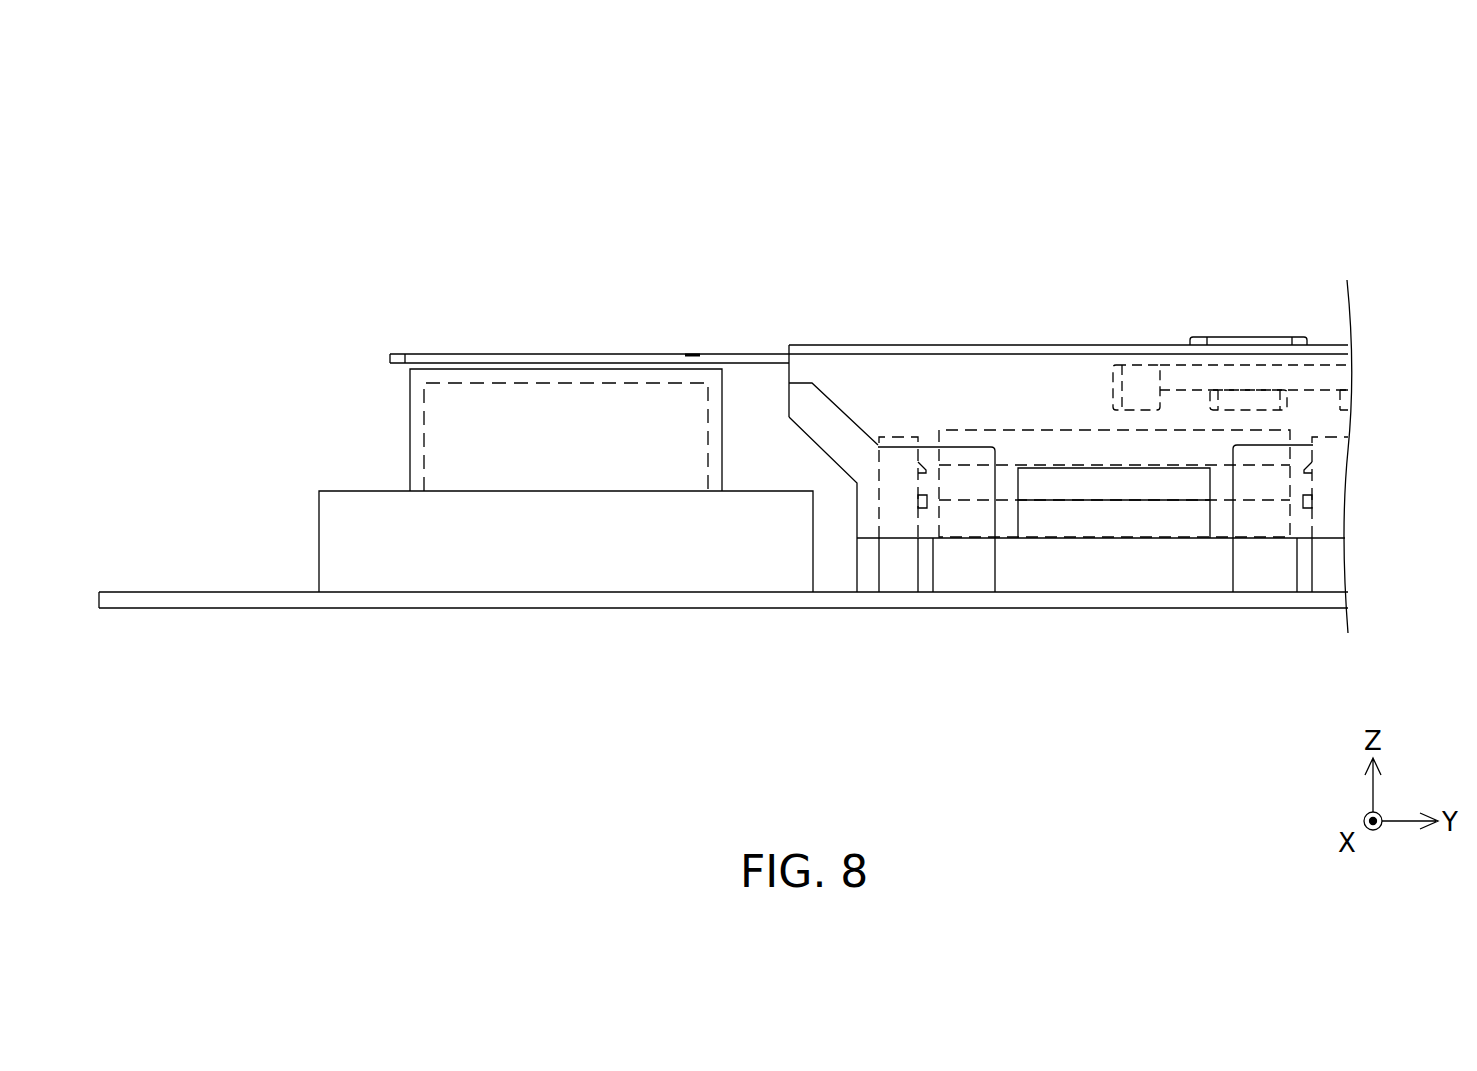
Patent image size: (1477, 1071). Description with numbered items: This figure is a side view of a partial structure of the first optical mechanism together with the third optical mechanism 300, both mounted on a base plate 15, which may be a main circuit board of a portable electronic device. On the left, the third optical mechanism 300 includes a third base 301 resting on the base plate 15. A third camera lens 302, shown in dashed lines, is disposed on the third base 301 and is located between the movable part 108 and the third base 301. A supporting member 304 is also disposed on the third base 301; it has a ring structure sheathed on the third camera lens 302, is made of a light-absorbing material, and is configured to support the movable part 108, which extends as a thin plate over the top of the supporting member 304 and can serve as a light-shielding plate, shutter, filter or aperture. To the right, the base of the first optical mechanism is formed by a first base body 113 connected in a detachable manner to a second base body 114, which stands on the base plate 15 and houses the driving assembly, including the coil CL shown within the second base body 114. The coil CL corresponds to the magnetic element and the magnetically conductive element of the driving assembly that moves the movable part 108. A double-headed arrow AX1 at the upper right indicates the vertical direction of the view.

The base plate 15 is at (952, 600).
The third optical mechanism 300 is at (533, 476).
The third base 301 is at (641, 575).
The third camera lens 302 is at (560, 402).
The supporting member 304 is at (417, 422).
The movable part 108 is at (645, 356).
The second base body 114 is at (1190, 575).
The first base body 113 is at (1313, 413).
The coil CL is at (1082, 482).
The axis AX1 is at (1451, 152).